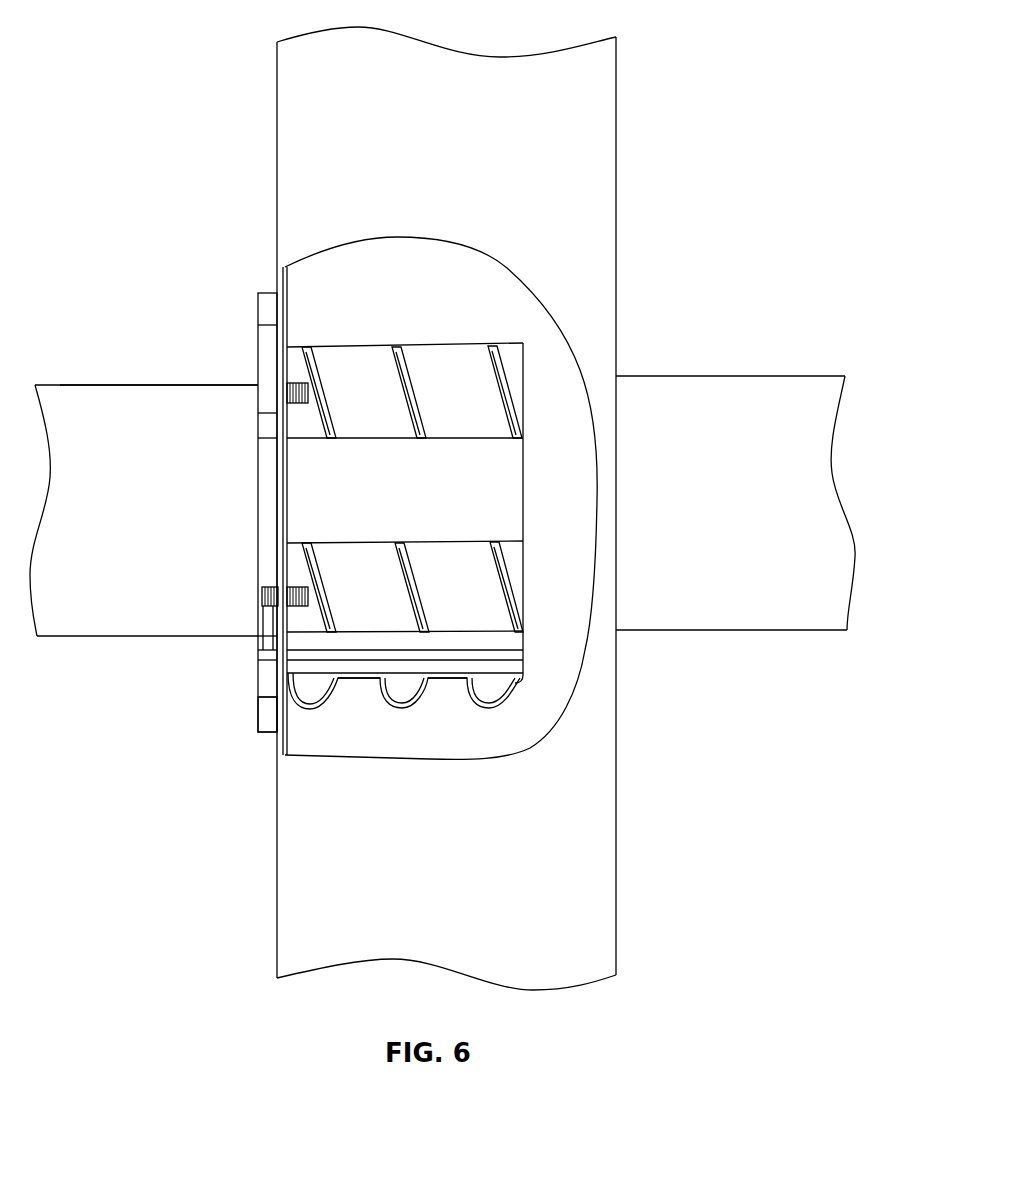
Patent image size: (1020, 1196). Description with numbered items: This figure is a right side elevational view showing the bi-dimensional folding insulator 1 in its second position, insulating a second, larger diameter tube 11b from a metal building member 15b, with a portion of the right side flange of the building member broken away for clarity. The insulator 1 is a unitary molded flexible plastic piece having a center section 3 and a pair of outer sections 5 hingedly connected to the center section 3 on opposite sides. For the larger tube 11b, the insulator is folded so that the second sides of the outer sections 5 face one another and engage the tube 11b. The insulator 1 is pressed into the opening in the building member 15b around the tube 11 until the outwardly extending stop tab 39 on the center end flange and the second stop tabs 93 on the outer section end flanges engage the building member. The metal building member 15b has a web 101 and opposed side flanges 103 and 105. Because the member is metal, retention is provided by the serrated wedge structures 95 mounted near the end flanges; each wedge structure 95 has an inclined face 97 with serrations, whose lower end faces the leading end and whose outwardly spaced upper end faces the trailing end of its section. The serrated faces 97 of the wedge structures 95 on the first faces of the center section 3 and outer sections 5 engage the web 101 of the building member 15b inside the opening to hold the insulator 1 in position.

The bi-dimensional folding insulator 1 is at (350, 350).
The center section 3 is at (447, 678).
The outer sections 5 is at (526, 420).
The tube 11 is at (102, 385).
The second tube 11b is at (163, 385).
The metal building member 15b is at (618, 208).
The stop tab 39 is at (258, 717).
The second stop tab 93 is at (258, 311).
The serrated wedge structures 95 is at (311, 396).
The inclined face 97 is at (296, 404).
The web 101 is at (287, 299).
The side flange 103 is at (466, 156).
The side flange 105 is at (434, 280).